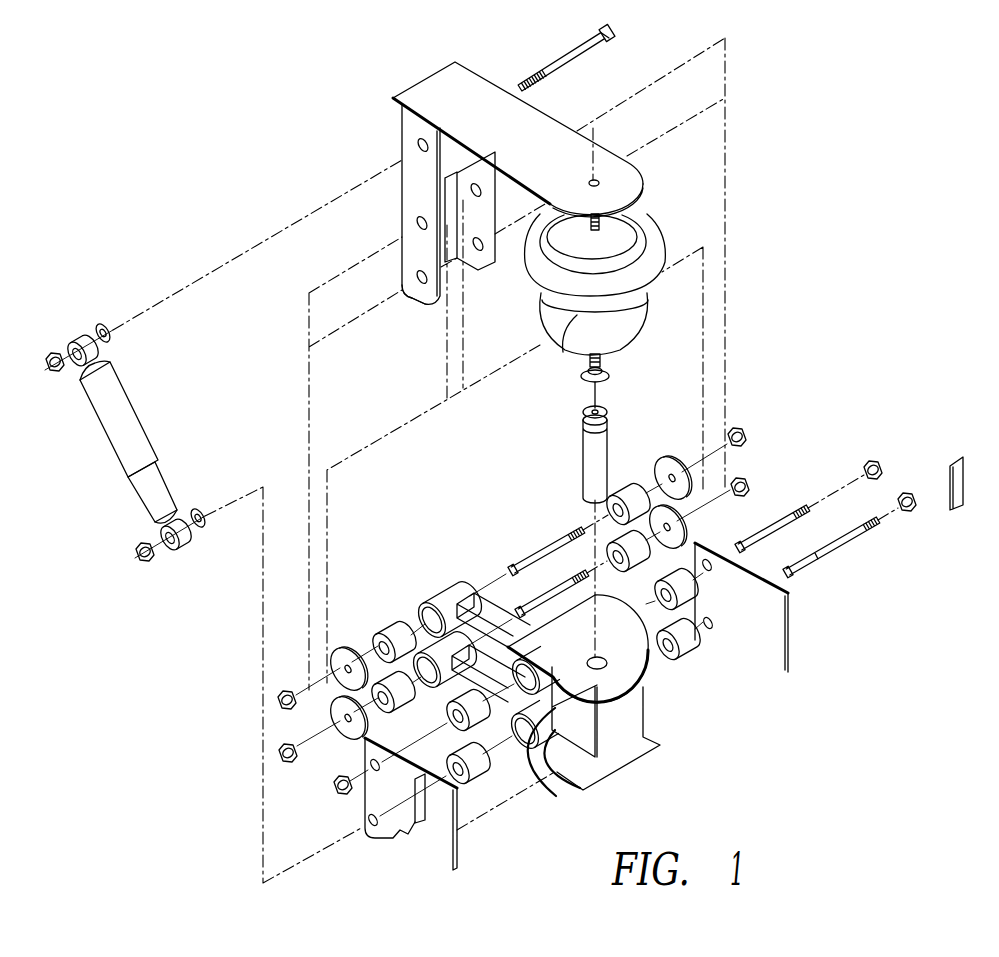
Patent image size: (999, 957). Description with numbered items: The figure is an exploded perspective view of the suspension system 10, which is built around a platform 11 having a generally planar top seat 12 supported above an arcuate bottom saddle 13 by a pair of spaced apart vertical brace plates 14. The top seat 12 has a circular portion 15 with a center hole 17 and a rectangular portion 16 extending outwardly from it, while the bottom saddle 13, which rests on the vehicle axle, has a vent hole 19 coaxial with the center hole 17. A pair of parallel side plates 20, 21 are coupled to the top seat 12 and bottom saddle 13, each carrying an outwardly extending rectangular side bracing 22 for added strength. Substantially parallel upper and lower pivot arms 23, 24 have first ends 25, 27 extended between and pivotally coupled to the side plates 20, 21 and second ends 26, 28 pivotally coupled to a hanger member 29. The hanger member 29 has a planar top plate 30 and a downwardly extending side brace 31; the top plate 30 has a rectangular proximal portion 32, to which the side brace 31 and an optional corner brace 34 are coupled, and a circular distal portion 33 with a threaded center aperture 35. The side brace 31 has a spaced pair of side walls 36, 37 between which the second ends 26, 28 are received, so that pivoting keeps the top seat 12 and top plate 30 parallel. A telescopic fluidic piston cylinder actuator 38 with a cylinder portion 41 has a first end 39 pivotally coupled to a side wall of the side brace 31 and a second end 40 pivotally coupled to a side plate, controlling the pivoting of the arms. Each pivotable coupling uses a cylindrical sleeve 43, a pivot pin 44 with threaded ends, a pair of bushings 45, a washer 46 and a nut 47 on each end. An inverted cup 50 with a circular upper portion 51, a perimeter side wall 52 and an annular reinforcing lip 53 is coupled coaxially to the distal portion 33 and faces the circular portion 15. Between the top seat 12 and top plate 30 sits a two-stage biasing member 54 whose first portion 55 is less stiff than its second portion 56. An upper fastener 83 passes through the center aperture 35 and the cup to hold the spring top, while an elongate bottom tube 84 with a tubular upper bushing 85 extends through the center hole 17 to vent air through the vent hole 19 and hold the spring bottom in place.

The suspension system 10 is at (749, 131).
The platform 11 is at (660, 695).
The top seat 12 is at (616, 637).
The bottom saddle 13 is at (598, 770).
The brace plates 14 is at (555, 770).
The circular portion 15 is at (620, 650).
The rectangular portion 16 is at (575, 625).
The center hole 17 is at (603, 655).
The vent hole 19 is at (632, 745).
The side plate 20 is at (440, 830).
The side plate 21 is at (786, 673).
The side bracing 22 is at (955, 510).
The upper pivot arm 23 is at (495, 598).
The lower pivot arm 24 is at (470, 703).
The first end 25 is at (505, 715).
The second end 26 is at (420, 596).
The first end 27 is at (518, 742).
The second end 28 is at (457, 686).
The hanger member 29 is at (408, 69).
The top plate 30 is at (542, 139).
The side brace 31 is at (393, 223).
The proximal portion 32 is at (470, 78).
The distal portion 33 is at (628, 185).
The corner brace 34 is at (420, 146).
The center aperture 35 is at (600, 180).
The side wall 36 is at (404, 292).
The side wall 37 is at (466, 268).
The telescopic fluidic piston cylinder actuator 38 is at (143, 434).
The first end 39 is at (78, 340).
The second end 40 is at (122, 402).
The cylinder portion 41 is at (157, 475).
The sleeve 43 is at (447, 597).
The pivot pin 44 is at (560, 533).
The bushings 45 is at (398, 635).
The washer 46 is at (337, 660).
The nut 47 is at (280, 694).
The inverted cup 50 is at (688, 245).
The upper portion 51 is at (632, 228).
The perimeter side wall 52 is at (640, 275).
The reinforcing lip 53 is at (580, 313).
The biasing member 54 is at (528, 316).
The first portion 55 is at (576, 335).
The second portion 56 is at (620, 335).
The upper fastener 83 is at (590, 222).
The bottom tube 84 is at (608, 450).
The upper bushing 85 is at (606, 375).